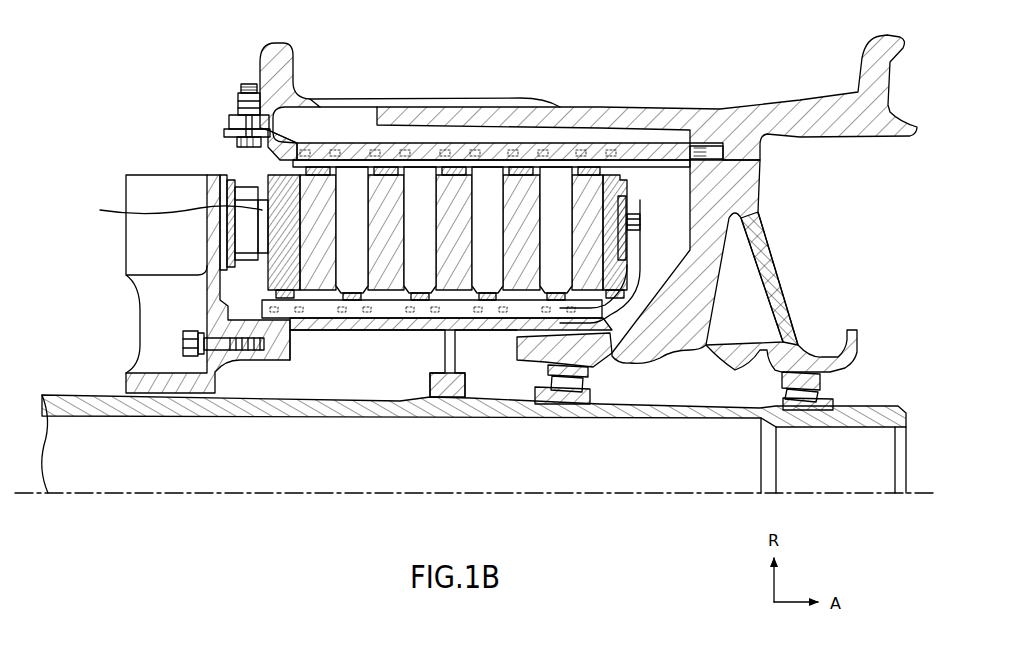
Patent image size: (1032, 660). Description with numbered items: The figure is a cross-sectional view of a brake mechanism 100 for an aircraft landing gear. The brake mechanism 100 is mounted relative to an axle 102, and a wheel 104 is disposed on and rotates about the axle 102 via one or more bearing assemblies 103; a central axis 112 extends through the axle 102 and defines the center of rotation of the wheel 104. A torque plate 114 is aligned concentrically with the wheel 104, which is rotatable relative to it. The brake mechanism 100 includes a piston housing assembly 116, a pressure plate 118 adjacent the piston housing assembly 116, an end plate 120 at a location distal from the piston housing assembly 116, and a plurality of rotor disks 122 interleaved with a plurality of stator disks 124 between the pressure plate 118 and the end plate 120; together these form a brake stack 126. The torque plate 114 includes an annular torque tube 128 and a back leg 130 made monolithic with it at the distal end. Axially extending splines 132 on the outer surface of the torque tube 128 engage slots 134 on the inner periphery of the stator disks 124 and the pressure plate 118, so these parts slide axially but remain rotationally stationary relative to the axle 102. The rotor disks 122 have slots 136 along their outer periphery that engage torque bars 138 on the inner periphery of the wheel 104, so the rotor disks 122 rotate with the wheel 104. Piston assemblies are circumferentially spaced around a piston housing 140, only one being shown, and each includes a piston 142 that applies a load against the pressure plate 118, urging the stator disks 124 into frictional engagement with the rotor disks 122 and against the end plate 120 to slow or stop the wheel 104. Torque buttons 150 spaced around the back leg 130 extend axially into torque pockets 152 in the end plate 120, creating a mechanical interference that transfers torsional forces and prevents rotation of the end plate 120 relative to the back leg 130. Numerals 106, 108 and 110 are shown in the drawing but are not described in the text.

The brake mechanism 100 is at (128, 84).
The axle 102 is at (670, 414).
The bearing assemblies 103 is at (825, 391).
The wheel 104 is at (772, 212).
The bearing 106 is at (652, 356).
The housing 108 is at (683, 106).
The strut 110 is at (779, 260).
The central axis 112 is at (637, 495).
The torque plate 114 is at (342, 336).
The piston housing assembly 116 is at (188, 162).
The pressure plate 118 is at (268, 176).
The end plate 120 is at (620, 184).
The rotor disks 122 is at (321, 186).
The stator disks 124 is at (419, 176).
The brake stack 126 is at (538, 178).
The torque tube 128 is at (306, 334).
The back leg 130 is at (632, 268).
The splines 132 is at (262, 308).
The slots 134 is at (533, 315).
The slots 136 is at (376, 166).
The torque bars 138 is at (628, 152).
The piston housing 140 is at (126, 179).
The piston 142 is at (169, 210).
The torque buttons 150 is at (627, 202).
The torque pocket 152 is at (618, 260).